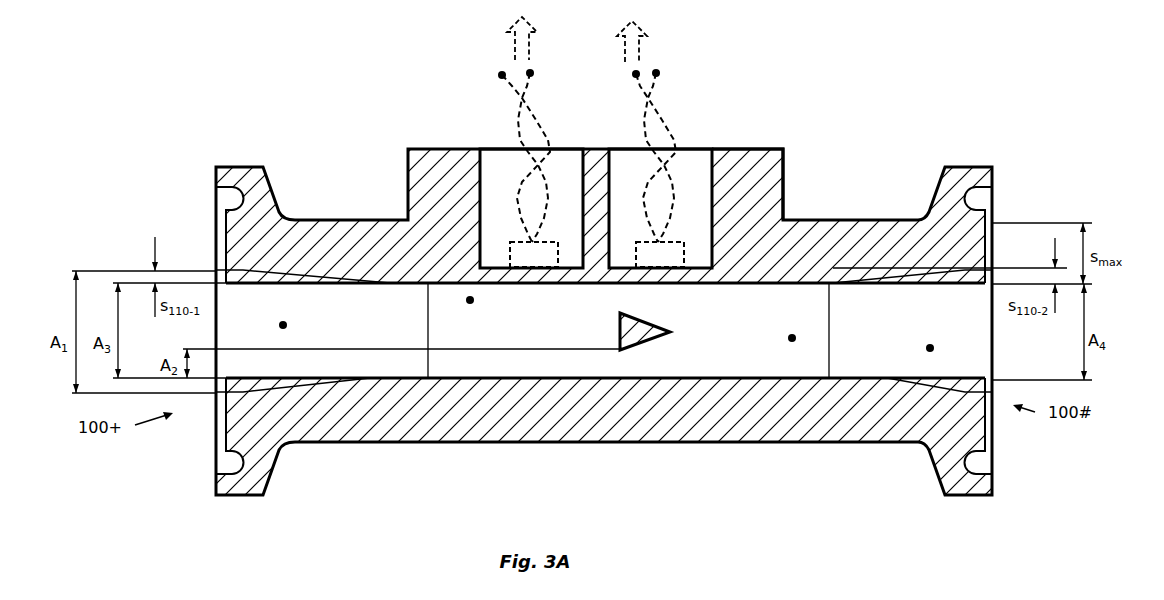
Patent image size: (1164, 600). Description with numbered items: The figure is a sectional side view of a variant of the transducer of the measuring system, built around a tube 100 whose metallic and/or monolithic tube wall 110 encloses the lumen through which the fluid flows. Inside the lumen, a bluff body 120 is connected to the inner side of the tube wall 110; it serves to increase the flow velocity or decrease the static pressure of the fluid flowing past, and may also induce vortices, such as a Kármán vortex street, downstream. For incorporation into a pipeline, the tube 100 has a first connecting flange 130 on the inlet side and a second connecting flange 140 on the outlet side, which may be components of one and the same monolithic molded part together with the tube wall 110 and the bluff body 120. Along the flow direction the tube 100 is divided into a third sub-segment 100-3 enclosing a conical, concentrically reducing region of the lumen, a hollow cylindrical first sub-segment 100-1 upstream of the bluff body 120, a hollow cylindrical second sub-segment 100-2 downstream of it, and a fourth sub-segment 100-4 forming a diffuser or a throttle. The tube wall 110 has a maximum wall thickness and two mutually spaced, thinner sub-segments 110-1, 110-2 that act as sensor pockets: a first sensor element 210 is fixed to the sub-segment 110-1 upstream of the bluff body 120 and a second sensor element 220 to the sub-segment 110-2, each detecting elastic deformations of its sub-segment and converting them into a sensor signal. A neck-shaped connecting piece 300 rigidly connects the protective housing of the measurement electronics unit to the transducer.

The tube 100 is at (718, 331).
The tube wall 110 is at (358, 445).
The first sub-segment 110-1 is at (545, 283).
The second sub-segment 110-2 is at (683, 283).
The bluff body 120 is at (630, 350).
The first connecting flange 130 is at (240, 173).
The second connecting flange 140 is at (958, 173).
The first sensor element 210 is at (522, 250).
The second sensor element 220 is at (679, 250).
The neck-shaped connecting piece 300 is at (779, 170).
The first sub-segment of the tube 100-1 is at (470, 300).
The second sub-segment of the tube 100-2 is at (792, 338).
The third sub-segment of the tube 100-3 is at (283, 325).
The fourth sub-segment of the tube 100-4 is at (930, 348).